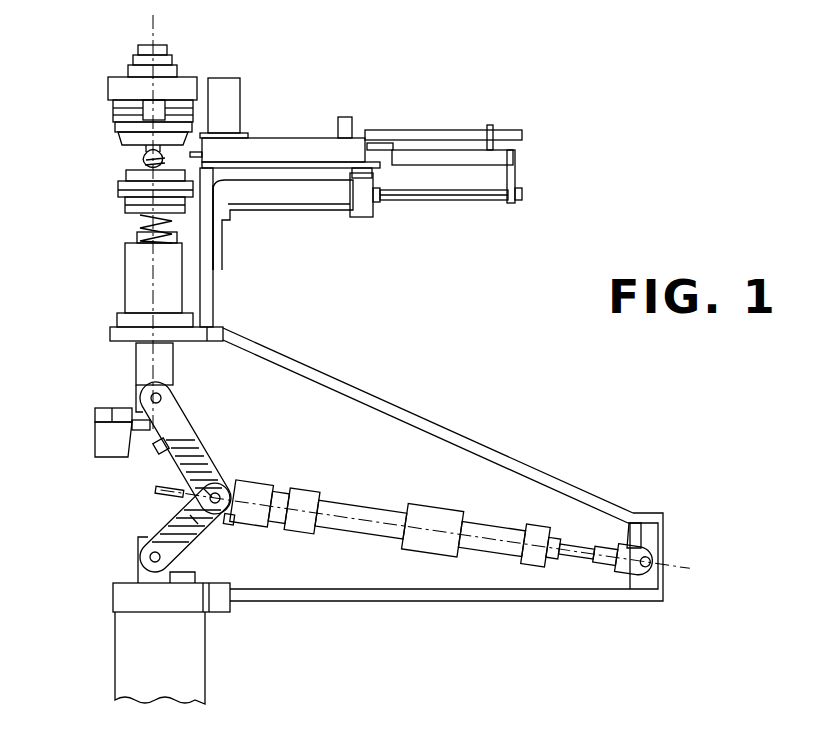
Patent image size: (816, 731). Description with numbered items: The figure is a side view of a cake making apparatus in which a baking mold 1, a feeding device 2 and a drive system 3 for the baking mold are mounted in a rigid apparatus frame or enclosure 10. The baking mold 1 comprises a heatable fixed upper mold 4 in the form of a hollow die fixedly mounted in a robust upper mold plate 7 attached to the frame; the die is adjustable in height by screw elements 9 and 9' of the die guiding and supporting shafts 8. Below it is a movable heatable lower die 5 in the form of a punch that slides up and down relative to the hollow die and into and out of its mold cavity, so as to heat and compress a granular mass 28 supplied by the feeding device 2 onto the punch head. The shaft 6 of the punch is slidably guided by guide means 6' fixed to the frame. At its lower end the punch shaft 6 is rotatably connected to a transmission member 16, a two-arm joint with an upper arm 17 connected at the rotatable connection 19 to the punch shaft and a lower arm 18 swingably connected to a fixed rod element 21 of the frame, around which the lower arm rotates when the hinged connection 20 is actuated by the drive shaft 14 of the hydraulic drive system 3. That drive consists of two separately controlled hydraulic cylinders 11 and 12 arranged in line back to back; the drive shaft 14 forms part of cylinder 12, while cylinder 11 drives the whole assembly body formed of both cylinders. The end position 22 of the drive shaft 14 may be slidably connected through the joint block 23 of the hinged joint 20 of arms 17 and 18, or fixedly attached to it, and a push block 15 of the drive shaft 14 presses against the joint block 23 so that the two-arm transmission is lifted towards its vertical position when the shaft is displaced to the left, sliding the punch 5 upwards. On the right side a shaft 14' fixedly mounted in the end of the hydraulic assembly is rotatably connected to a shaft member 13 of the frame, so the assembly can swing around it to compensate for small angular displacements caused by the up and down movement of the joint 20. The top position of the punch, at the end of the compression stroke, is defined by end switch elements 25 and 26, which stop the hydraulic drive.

The baking mold 1 is at (110, 137).
The feeding device 2 is at (297, 143).
The drive system 3 is at (422, 494).
The upper mold 4 is at (118, 115).
The lower die 5 is at (117, 192).
The shaft 6 is at (113, 313).
The guide means 6' is at (111, 279).
The upper mold plate 7 is at (187, 80).
The die guiding and supporting shafts 8 is at (162, 148).
The screw element 9 is at (177, 45).
The screw element 9' is at (114, 35).
The apparatus frame 10 is at (485, 600).
The hydraulic cylinder 11 is at (487, 530).
The hydraulic cylinder 12 is at (355, 513).
The shaft member 13 is at (647, 558).
The drive shaft 14 is at (304, 483).
The shaft 14' is at (588, 597).
The push block 15 is at (255, 490).
The transmission member 16 is at (167, 530).
The upper arm 17 is at (177, 415).
The lower arm 18 is at (193, 520).
The rotatable connection 19 is at (147, 393).
The hinged connection 20 is at (230, 510).
The rod element 21 is at (140, 558).
The end position 22 is at (208, 490).
The joint block 23 is at (229, 522).
The end switch element 25 is at (157, 447).
The end switch element 26 is at (103, 438).
The granular mass 28 is at (127, 171).